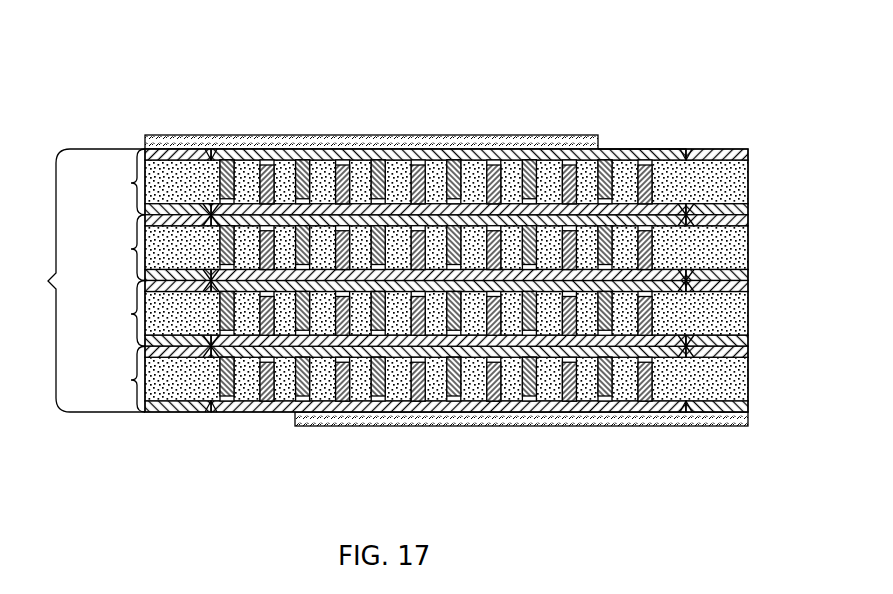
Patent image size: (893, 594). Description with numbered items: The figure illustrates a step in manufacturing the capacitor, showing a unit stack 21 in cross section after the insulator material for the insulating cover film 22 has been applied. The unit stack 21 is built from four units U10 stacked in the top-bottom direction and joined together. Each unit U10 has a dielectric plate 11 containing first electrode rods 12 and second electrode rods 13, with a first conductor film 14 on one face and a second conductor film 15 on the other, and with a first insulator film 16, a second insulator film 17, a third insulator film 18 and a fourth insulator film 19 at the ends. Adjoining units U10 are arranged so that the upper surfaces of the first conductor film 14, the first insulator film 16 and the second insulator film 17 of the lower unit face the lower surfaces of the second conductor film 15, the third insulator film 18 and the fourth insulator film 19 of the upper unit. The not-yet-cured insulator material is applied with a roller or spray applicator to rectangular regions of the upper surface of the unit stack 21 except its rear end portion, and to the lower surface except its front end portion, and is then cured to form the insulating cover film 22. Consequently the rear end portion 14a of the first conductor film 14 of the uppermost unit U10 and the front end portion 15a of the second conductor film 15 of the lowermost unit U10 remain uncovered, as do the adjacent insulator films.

The unit stack 21 is at (40, 273).
The unit U10 is at (123, 175).
The dielectric plate 11 is at (148, 182).
The first electrode rods 12 is at (370, 141).
The second electrode rods 13 is at (408, 141).
The first conductor film 14 is at (350, 141).
The second conductor film 15 is at (558, 141).
The rear end portion of the first conductor film 14a is at (636, 141).
The front end portion of the second conductor film 15a is at (247, 404).
The first insulator film 16 is at (158, 196).
The third insulator film 18 is at (186, 260).
The second insulator film 17 is at (727, 141).
The fourth insulator film 19 is at (690, 260).
The insulating cover film 22 is at (490, 138).